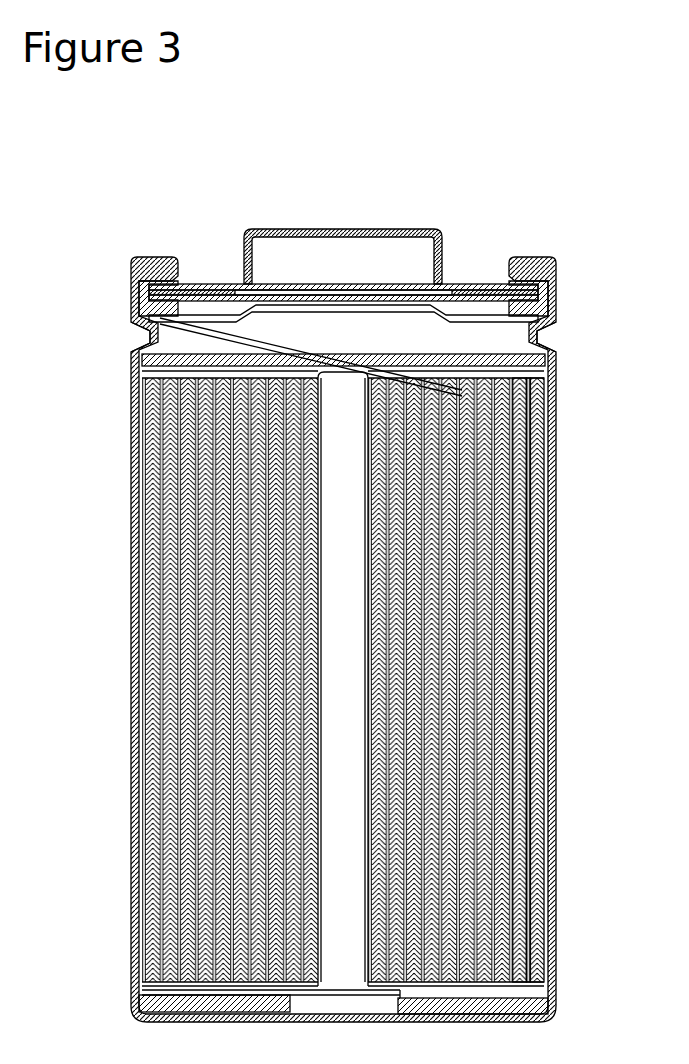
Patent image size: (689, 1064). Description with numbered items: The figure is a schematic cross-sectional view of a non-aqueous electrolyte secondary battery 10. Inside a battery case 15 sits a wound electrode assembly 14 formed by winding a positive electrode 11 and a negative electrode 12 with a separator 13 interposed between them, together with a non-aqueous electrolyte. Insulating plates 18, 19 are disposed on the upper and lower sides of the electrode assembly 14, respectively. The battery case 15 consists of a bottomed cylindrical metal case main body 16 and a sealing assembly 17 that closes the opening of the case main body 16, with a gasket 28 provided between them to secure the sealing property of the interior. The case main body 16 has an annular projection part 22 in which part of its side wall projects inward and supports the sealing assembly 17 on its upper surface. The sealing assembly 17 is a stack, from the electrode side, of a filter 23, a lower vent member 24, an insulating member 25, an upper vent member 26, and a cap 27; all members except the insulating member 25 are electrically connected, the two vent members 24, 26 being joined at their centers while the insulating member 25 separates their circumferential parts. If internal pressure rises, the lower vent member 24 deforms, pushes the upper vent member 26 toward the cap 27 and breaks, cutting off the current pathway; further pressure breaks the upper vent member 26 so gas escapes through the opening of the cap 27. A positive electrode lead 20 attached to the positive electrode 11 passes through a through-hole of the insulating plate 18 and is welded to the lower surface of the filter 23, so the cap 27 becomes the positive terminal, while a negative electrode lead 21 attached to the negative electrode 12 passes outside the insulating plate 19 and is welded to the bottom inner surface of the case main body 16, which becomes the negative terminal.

The non-aqueous electrolyte secondary battery 10 is at (563, 111).
The positive electrode 11 is at (556, 737).
The negative electrode 12 is at (556, 763).
The separator 13 is at (556, 789).
The wound electrode assembly 14 is at (640, 729).
The battery case 15 is at (540, 176).
The case main body 16 is at (530, 257).
The sealing assembly 17 is at (466, 283).
The insulating plate 18 is at (549, 356).
The insulating plate 19 is at (556, 1003).
The positive electrode lead 20 is at (131, 320).
The negative electrode lead 21 is at (140, 1003).
The projection part 22 is at (131, 338).
The filter 23 is at (340, 301).
The lower vent member 24 is at (258, 284).
The insulating member 25 is at (207, 284).
The upper vent member 26 is at (268, 284).
The cap 27 is at (404, 229).
The gasket 28 is at (560, 271).